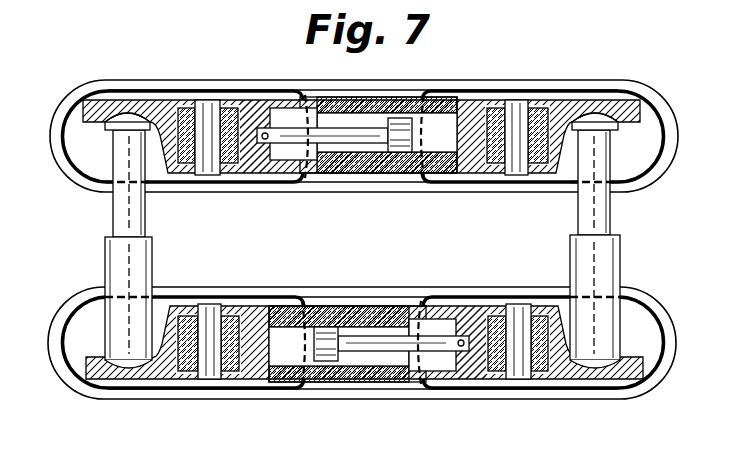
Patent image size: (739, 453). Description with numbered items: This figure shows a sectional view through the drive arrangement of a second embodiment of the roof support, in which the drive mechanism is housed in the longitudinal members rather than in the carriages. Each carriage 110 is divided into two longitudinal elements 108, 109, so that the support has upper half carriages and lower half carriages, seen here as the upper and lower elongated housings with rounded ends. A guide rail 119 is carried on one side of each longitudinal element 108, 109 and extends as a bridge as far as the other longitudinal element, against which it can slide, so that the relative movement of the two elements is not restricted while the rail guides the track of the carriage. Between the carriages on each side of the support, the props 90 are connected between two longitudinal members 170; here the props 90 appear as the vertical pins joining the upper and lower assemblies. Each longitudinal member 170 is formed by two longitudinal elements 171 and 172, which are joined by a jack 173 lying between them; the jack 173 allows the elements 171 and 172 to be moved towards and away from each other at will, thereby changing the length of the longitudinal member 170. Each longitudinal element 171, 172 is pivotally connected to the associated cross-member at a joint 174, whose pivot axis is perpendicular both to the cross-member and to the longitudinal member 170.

The prop 90 is at (615, 252).
The longitudinal element 108 is at (72, 122).
The longitudinal element 109 is at (663, 138).
The carriage 110 is at (653, 112).
The guide rail 119 is at (378, 90).
The longitudinal member 170 is at (257, 115).
The longitudinal element 171 is at (485, 117).
The longitudinal element 172 is at (250, 118).
The jack 173 is at (372, 137).
The joint 174 is at (517, 365).